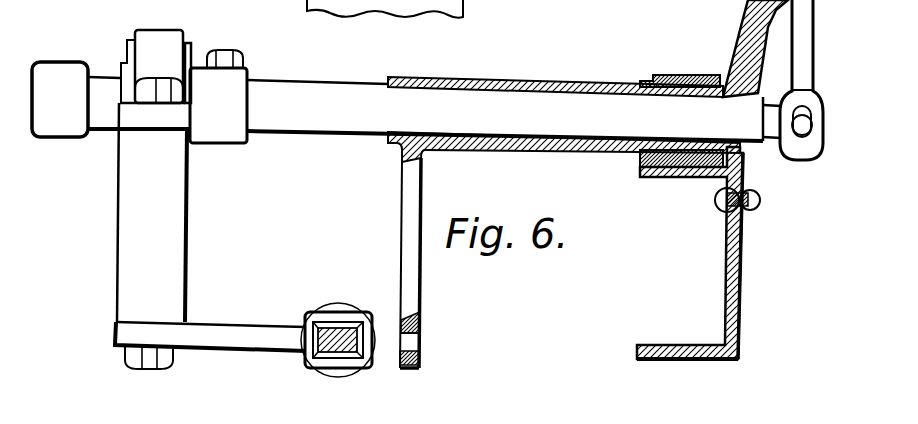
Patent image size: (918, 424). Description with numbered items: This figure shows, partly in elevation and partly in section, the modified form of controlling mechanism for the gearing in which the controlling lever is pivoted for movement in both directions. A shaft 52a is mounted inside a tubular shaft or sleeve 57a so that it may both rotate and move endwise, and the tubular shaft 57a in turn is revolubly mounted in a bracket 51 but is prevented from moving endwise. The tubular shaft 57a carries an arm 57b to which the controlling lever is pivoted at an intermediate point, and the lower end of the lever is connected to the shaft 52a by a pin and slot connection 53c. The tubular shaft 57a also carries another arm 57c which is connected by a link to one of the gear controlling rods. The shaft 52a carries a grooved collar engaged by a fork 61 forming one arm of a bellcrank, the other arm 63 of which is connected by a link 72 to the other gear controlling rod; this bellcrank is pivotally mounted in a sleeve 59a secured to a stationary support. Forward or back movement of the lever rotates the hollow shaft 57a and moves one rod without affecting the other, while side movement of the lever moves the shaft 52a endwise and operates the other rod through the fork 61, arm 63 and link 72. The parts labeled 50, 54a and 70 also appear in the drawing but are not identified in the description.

The channel bracket 50 is at (740, 283).
The bearing block 51 is at (697, 62).
The rod 52a is at (358, 70).
The clevis eye 53c is at (800, 137).
The clamp block 54a is at (217, 132).
The rail plate 57a is at (537, 70).
The bracket arm 57b is at (745, 12).
The web 57c is at (422, 292).
The vertical arm 59a is at (178, 234).
The clamp 61 is at (172, 20).
The cross bar 63 is at (228, 342).
The housing 70 is at (455, 5).
The block 72 is at (322, 352).